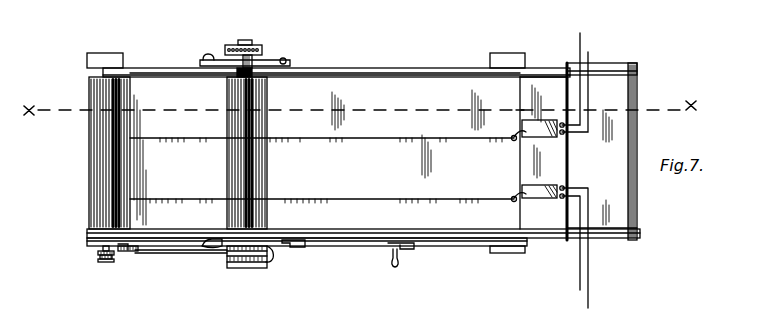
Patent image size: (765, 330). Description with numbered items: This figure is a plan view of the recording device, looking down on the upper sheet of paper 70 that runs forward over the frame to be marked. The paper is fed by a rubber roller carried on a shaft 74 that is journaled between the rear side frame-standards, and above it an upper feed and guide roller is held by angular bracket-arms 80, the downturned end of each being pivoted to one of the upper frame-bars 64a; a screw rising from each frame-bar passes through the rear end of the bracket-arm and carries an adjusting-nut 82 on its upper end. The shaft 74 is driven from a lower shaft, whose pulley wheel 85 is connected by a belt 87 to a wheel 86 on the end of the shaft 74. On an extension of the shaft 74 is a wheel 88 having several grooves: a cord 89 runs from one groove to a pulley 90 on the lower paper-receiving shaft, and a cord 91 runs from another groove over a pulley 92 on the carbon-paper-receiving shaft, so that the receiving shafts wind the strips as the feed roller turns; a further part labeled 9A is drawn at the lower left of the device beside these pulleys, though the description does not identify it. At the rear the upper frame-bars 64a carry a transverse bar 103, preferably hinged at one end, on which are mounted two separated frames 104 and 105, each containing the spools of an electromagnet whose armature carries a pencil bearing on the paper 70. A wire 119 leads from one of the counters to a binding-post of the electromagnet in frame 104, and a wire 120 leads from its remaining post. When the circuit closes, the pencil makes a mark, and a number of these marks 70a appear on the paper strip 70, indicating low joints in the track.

The roll of paper 70 is at (457, 78).
The marks 70a is at (432, 141).
The upper frame-bars 64a is at (399, 66).
The angular bracket-arms 80 is at (207, 58).
The adjusting-nut 82 is at (292, 63).
The belt or pulley wheel 85 is at (230, 45).
The wheel 86 is at (240, 40).
The belt 87 is at (285, 58).
The grooved wheel 88 is at (270, 249).
The cord or belt 89 is at (188, 256).
The pulley or wheel 90 is at (103, 260).
The cord or belt 91 is at (128, 252).
The pulley or wheel 92 is at (100, 252).
The lug 9A is at (127, 250).
The shaft 74 is at (243, 269).
The transverse bar 103 is at (543, 73).
The frame 104 is at (547, 205).
The frame 105 is at (565, 147).
The wire 119 is at (590, 96).
The wire 120 is at (583, 85).